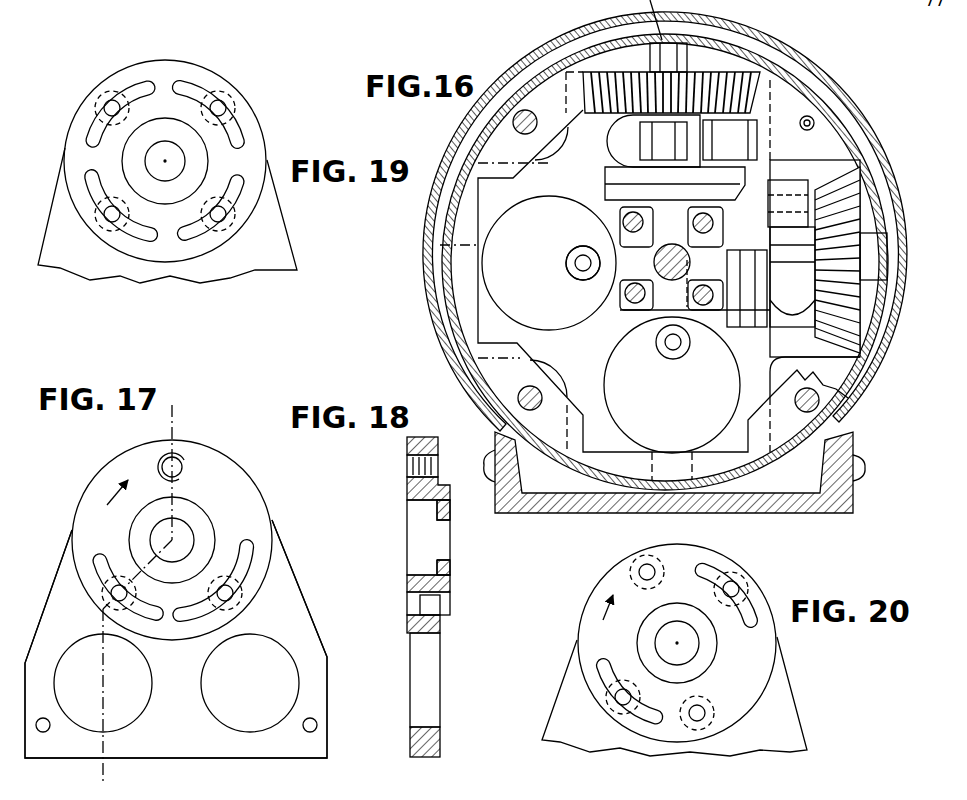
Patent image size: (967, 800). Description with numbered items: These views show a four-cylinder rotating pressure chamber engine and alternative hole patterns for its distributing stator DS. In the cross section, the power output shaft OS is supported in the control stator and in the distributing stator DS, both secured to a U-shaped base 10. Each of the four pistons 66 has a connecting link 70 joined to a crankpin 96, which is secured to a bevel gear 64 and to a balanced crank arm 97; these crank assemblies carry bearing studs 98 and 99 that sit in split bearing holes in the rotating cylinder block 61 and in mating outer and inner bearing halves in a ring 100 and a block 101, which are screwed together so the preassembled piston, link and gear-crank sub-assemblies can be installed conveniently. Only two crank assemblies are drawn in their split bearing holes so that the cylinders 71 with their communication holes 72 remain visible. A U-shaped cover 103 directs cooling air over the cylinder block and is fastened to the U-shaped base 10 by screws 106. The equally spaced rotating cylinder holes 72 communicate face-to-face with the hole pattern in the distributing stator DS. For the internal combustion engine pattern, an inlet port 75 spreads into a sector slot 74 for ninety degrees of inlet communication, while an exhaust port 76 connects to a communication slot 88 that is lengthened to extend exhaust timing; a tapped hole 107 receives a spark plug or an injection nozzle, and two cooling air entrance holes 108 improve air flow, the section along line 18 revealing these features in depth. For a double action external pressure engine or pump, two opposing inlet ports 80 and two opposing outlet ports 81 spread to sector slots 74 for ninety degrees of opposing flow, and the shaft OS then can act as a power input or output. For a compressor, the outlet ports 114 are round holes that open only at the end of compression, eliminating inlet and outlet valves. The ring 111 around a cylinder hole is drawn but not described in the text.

In FIG. 16, the U-shaped base 10 is at (815, 545).
In FIG. 16, the bearing stud 98 is at (634, 20).
In FIG. 16, the bevel gear 64 is at (763, 90).
In FIG. 16, the cylinder block 61 is at (795, 118).
In FIG. 16, the connecting link 70 is at (783, 180).
In FIG. 16, the crankpin 96 is at (815, 187).
In FIG. 16, the piston 66 is at (607, 143).
In FIG. 16, the bearing stud 99 is at (627, 203).
In FIG. 16, the communication hole 72 is at (582, 254).
In FIG. 16, the U-shaped cover 103 is at (430, 272).
In FIG. 16, the cylinder 71 is at (497, 307).
In FIG. 16, the bushing 111 is at (581, 280).
In FIG. 16, the block 101 is at (628, 315).
In FIG. 16, the ring 100 is at (572, 403).
In FIG. 16, the power output shaft OS is at (692, 303).
In FIG. 16, the balanced crank arm 97 is at (753, 315).
In FIG. 16, the screw 106 is at (860, 461).
In FIG. 19, the outlet port 81 is at (106, 100).
In FIG. 19, the inlet port 80 is at (226, 100).
In FIG. 19, the sector slot 74 is at (92, 130).
In FIG. 17, the sector slot 74 is at (102, 563).
In FIG. 18, the sector slot 74 is at (407, 618).
In FIG. 20, the sector slot 74 is at (606, 668).
In FIG. 19, the distributing stator DS is at (298, 242).
In FIG. 17, the distributing stator DS is at (305, 592).
In FIG. 18, the distributing stator DS is at (396, 590).
In FIG. 20, the distributing stator DS is at (562, 655).
In FIG. 17, the section line 18 is at (153, 417).
In FIG. 17, the tapped hole 107 is at (164, 458).
In FIG. 18, the tapped hole 107 is at (408, 467).
In FIG. 17, the communication slot 88 is at (240, 548).
In FIG. 17, the inlet port 75 is at (110, 597).
In FIG. 18, the inlet port 75 is at (442, 610).
In FIG. 20, the inlet port 75 is at (740, 585).
In FIG. 17, the exhaust port 76 is at (236, 600).
In FIG. 17, the cooling air entrance hole 108 is at (206, 697).
In FIG. 18, the cooling air entrance hole 108 is at (440, 718).
In FIG. 20, the outlet port 114 is at (640, 562).